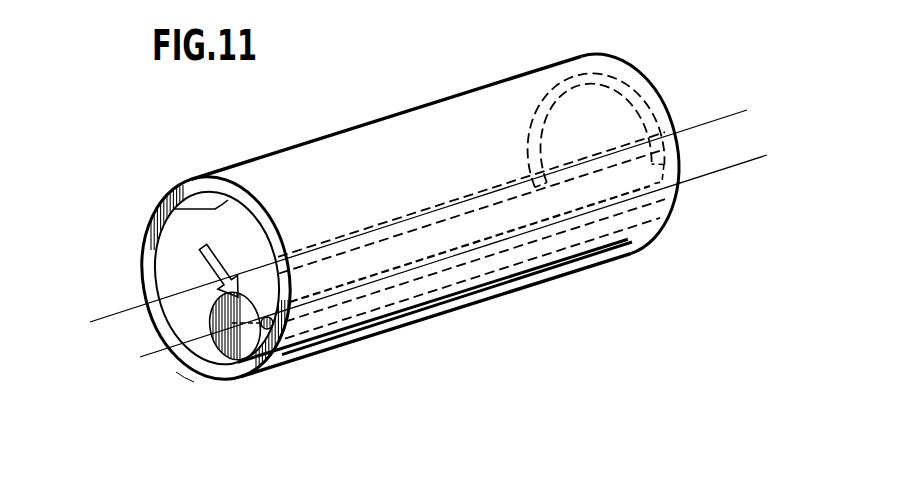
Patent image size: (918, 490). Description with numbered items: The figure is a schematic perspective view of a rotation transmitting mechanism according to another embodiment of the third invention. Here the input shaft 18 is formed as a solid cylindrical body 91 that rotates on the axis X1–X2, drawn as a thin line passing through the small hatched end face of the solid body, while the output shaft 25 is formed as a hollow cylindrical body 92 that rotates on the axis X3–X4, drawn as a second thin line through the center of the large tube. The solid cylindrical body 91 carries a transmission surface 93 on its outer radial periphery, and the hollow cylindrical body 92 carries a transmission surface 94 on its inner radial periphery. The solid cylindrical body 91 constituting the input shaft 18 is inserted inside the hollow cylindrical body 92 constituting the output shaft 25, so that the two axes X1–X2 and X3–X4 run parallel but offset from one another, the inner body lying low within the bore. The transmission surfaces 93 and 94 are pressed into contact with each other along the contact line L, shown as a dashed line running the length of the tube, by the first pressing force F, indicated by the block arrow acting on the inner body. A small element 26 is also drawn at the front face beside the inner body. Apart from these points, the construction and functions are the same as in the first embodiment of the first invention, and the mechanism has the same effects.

The output shaft 25 is at (278, 150).
The hollow cylindrical body 92 is at (152, 182).
The transmission surface 94 is at (240, 197).
The first pressing force F is at (213, 256).
The input shaft 18 is at (224, 366).
The guide element 26 is at (288, 351).
The solid cylindrical body 91 is at (241, 370).
The transmission surface 93 is at (189, 368).
The contact line L is at (483, 286).
The axis X1–X2 end X1 is at (280, 320).
The axis X1–X2 end X2 is at (623, 198).
The axis X3–X4 end X3 is at (237, 285).
The axis X3–X4 end X4 is at (600, 152).